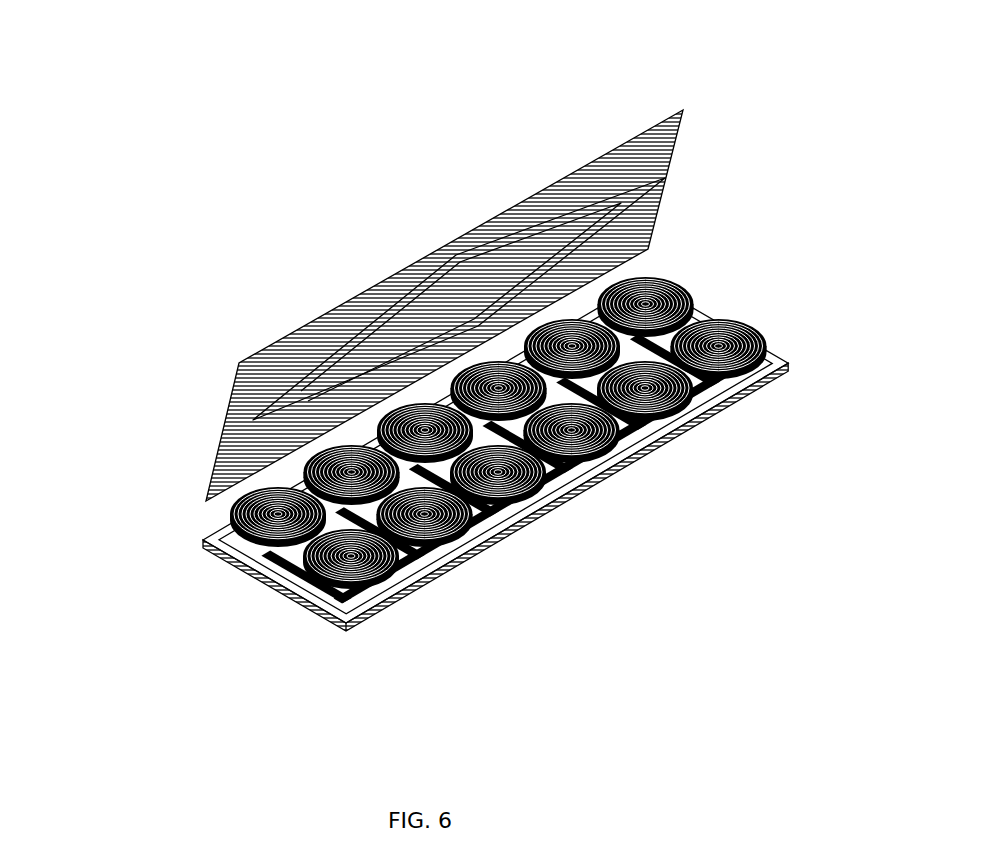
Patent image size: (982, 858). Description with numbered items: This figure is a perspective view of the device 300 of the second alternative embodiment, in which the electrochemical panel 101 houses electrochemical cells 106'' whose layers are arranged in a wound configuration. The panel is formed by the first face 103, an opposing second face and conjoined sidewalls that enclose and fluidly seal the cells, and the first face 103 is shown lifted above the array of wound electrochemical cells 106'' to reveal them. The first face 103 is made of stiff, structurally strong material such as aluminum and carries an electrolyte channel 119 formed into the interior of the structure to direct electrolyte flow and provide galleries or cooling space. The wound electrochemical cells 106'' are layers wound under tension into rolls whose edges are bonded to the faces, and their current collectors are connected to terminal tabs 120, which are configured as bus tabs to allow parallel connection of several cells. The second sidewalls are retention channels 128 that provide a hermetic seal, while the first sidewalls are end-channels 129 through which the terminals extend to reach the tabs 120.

The device 300 is at (257, 180).
The electrochemical panel 101 is at (163, 428).
The first face 103 is at (283, 327).
The electrolyte channel 119 is at (541, 208).
The wound electrochemical cell 106'' is at (498, 391).
The terminal tab 120 is at (547, 503).
The retention channel 128 is at (455, 550).
The end-channel 129 is at (767, 347).